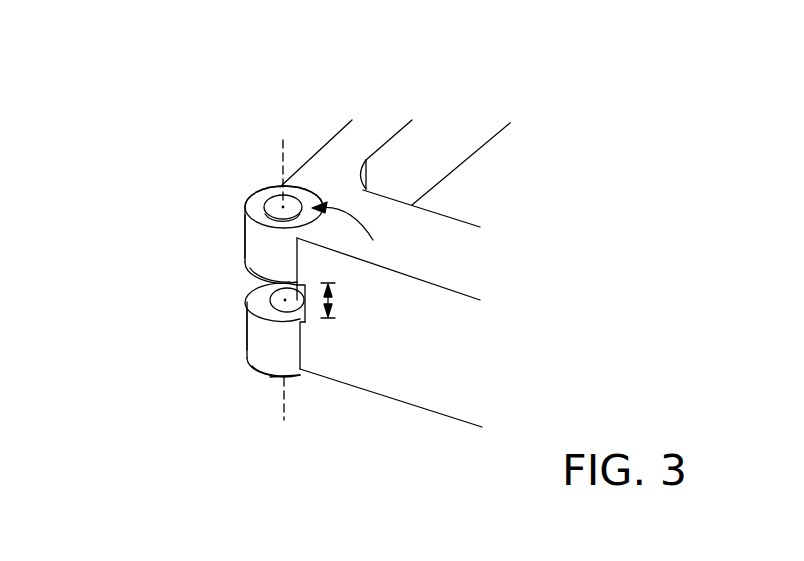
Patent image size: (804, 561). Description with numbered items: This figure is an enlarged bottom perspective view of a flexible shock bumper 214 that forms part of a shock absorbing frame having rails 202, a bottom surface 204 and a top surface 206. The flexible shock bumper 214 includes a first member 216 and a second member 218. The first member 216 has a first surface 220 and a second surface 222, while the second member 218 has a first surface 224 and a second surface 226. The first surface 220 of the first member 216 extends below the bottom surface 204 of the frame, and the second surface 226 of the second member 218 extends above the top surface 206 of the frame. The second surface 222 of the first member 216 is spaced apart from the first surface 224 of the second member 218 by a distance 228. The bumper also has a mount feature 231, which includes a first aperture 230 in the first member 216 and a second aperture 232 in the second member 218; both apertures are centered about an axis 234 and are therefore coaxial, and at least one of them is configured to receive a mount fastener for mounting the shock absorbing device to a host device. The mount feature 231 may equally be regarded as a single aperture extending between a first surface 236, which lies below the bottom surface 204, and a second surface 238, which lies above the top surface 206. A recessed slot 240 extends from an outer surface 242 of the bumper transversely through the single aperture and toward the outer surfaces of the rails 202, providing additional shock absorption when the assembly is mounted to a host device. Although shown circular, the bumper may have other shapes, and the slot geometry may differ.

The rails 202 is at (313, 155).
The bottom surface 204 is at (353, 138).
The top surface 206 is at (412, 403).
The flexible shock bumper 214 is at (159, 273).
The first member 216 is at (263, 242).
The second member 218 is at (263, 352).
The first surface 220 is at (277, 192).
The second surface 222 is at (257, 277).
The first surface 224 is at (256, 305).
The second surface 226 is at (263, 377).
The distance 228 is at (334, 298).
The first aperture 230 is at (293, 194).
The mount feature 231 is at (360, 227).
The second aperture 232 is at (296, 287).
The axis 234 is at (282, 142).
The first surface 236 is at (252, 204).
The second surface 238 is at (292, 376).
The recessed slot 240 is at (305, 320).
The outer surface 242 is at (243, 253).